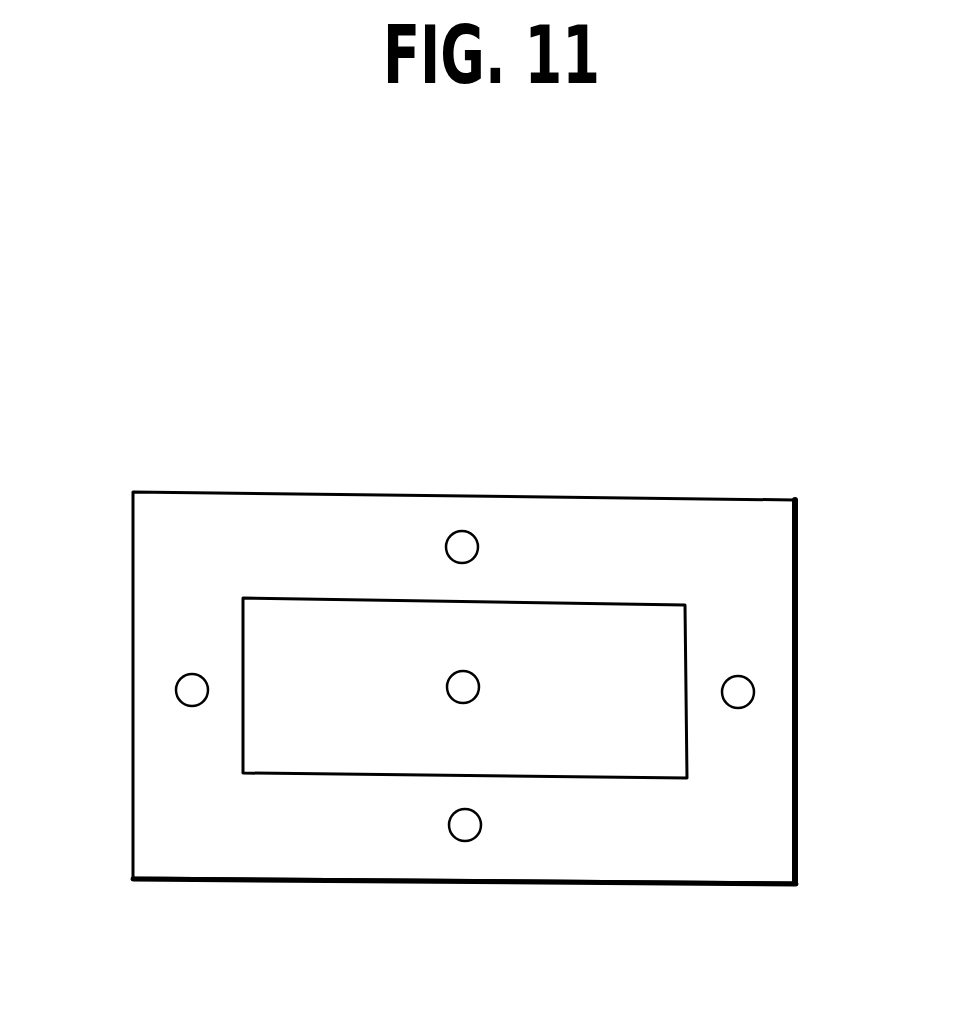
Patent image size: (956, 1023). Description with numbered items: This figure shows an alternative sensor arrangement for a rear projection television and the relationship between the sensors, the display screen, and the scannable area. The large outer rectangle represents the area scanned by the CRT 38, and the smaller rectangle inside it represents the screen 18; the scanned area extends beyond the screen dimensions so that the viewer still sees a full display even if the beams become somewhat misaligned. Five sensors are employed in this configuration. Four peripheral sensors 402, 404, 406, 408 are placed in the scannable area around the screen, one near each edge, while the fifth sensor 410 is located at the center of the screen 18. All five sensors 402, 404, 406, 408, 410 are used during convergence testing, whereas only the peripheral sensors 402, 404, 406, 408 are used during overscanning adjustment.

The area scanned by the CRT 38 is at (797, 582).
The screen 18 is at (613, 670).
The sensor 402 is at (756, 695).
The sensor 404 is at (472, 840).
The sensor 406 is at (177, 692).
The sensor 408 is at (467, 531).
The sensor 410 is at (470, 701).